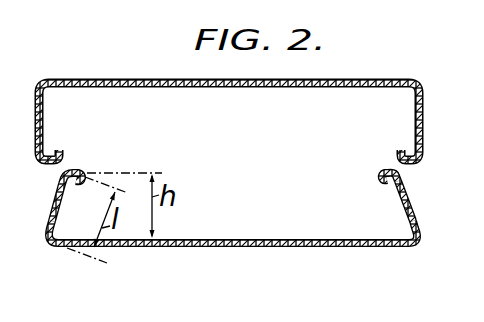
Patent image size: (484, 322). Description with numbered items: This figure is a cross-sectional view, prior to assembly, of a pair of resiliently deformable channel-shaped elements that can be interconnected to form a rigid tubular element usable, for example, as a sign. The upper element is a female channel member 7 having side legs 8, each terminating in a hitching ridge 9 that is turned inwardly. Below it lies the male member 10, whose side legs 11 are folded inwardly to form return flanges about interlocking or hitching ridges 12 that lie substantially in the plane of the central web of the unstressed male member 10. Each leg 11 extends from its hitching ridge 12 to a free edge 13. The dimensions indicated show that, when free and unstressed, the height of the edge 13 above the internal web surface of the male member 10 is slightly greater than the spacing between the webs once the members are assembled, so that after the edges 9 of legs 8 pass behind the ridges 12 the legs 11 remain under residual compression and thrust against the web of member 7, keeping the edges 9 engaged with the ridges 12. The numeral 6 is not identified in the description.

The container 6 is at (84, 9).
The female channel member 7 is at (145, 78).
The side legs 8 is at (426, 108).
The hitching ridge 9 is at (410, 154).
The male member 10 is at (203, 246).
The side legs 11 is at (415, 210).
The hitching ridge 12 is at (55, 244).
The free edge 13 is at (63, 172).